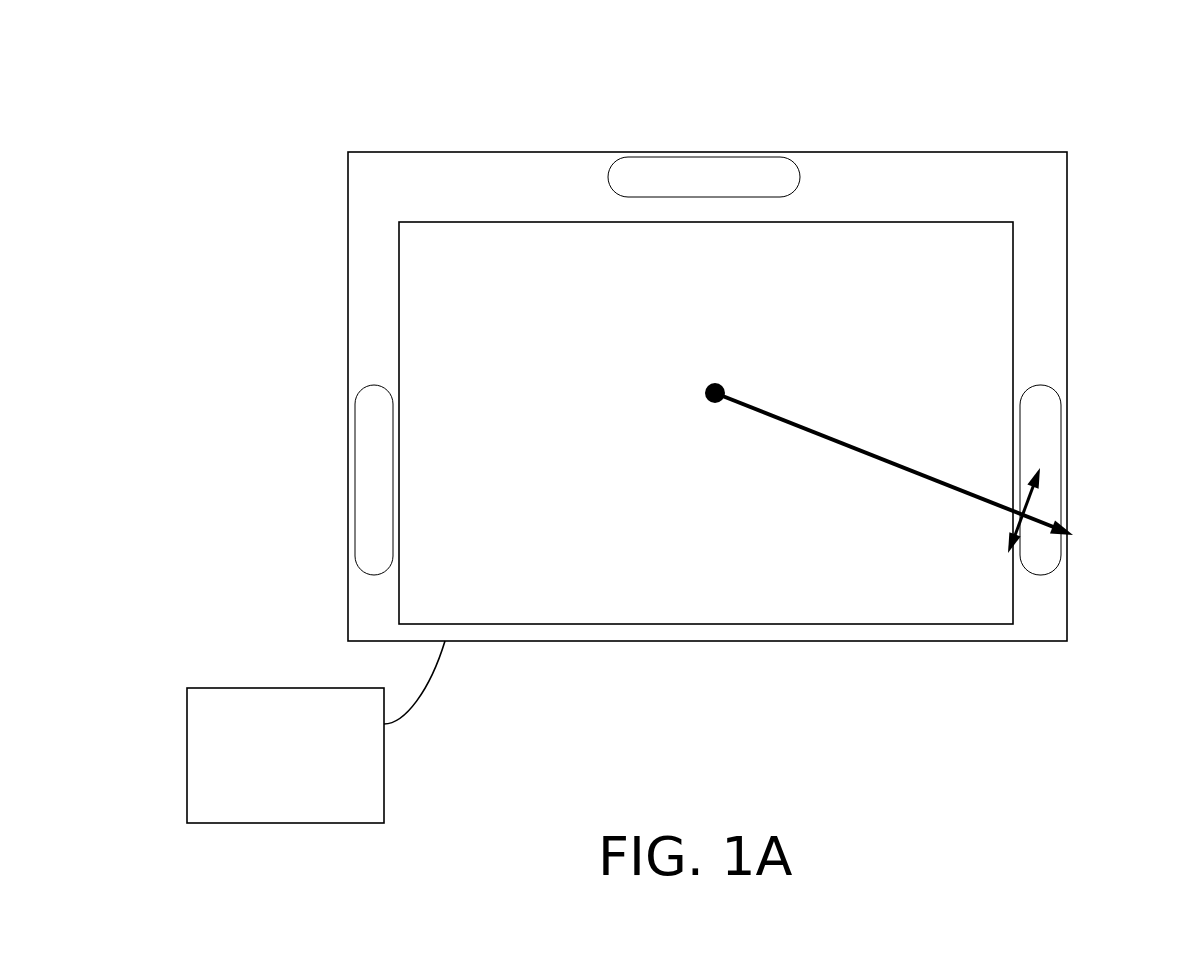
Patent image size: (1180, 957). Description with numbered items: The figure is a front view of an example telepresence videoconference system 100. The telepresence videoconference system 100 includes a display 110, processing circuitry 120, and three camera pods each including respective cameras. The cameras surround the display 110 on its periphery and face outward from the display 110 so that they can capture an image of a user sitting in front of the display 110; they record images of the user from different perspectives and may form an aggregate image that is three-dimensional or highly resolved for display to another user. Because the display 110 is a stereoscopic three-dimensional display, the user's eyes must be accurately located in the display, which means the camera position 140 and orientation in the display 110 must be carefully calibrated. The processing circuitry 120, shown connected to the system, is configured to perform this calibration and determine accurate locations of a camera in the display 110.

The telepresence videoconference system 100 is at (218, 90).
The display 110 is at (690, 282).
The processing circuitry 120 is at (304, 794).
The camera position 140 is at (928, 470).